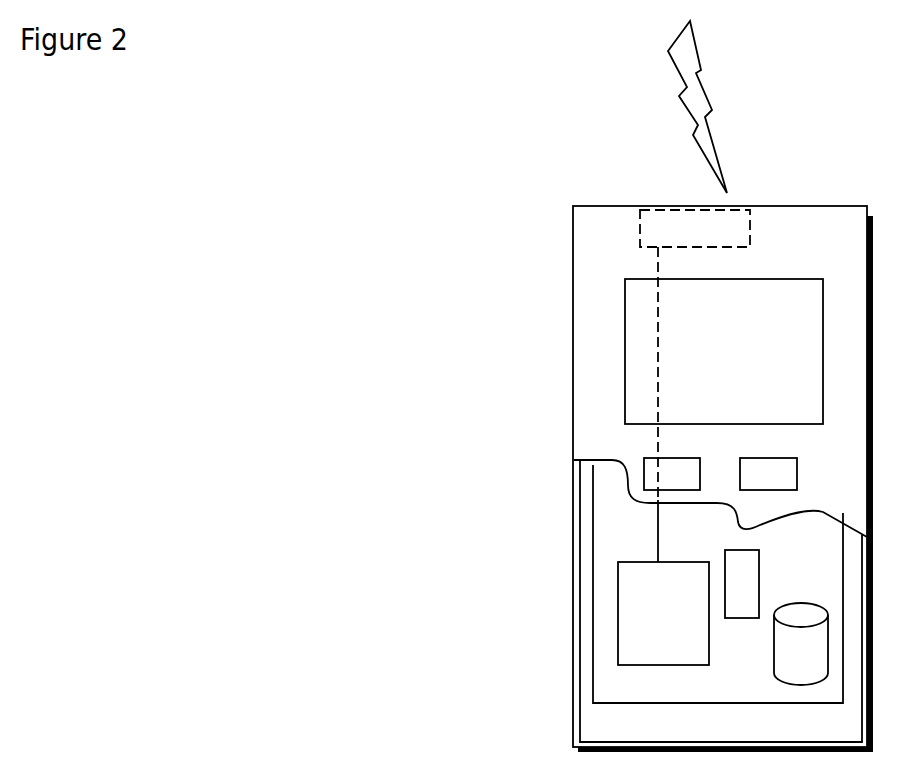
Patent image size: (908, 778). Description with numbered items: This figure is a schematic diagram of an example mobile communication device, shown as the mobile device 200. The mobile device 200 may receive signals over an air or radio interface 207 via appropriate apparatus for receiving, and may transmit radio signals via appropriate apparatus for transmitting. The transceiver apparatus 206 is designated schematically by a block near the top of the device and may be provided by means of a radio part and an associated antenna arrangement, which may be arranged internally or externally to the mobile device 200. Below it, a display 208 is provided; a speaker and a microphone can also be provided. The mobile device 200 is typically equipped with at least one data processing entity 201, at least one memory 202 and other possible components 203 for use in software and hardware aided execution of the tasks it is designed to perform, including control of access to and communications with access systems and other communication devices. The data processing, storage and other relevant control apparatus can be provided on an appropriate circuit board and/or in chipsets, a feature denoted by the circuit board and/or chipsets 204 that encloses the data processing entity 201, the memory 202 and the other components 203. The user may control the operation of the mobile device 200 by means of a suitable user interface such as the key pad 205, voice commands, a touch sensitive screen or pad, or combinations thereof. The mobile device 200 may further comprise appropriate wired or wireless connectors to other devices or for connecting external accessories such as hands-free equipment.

The mobile device 200 is at (575, 252).
The data processing entity 201 is at (623, 595).
The memory 202 is at (795, 657).
The other possible components 203 is at (742, 567).
The circuit board and/or chipsets 204 is at (617, 683).
The key pad 205 is at (647, 473).
The transceiver apparatus 206 is at (740, 221).
The air or radio interface 207 is at (730, 126).
The display 208 is at (640, 337).